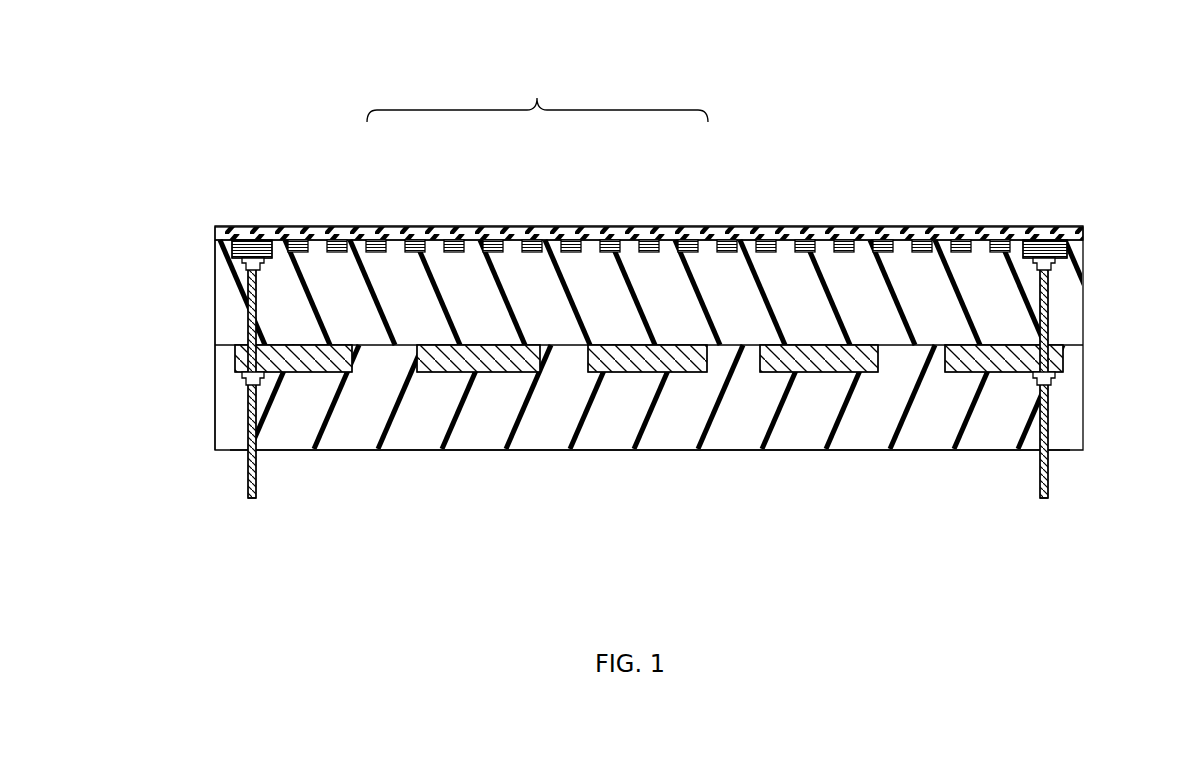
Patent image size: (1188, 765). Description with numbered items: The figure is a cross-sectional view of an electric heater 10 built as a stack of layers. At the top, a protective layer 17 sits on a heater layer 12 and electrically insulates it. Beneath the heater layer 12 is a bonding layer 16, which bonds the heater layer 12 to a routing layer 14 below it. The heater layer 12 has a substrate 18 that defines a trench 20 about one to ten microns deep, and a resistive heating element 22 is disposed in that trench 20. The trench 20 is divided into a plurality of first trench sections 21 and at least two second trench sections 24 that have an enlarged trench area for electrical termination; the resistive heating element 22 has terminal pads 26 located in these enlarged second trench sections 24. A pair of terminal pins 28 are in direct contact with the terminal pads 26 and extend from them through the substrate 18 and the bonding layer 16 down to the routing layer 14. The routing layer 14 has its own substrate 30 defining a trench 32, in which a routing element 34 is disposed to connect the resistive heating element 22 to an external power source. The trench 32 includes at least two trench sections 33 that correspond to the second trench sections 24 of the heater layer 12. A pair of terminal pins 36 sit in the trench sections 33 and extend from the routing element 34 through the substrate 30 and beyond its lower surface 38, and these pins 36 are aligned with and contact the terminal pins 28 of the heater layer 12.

The electric heater 10 is at (914, 93).
The heater layer 12 is at (1100, 285).
The routing layer 14 is at (1088, 417).
The bonding layer 16 is at (1083, 345).
The protective layer 17 is at (750, 240).
The substrate 18 is at (215, 292).
The trench 20 is at (537, 93).
The first trench sections 21 is at (492, 236).
The resistive heating element 22 is at (803, 228).
The second trench sections 24 is at (262, 238).
The terminal pads 26 is at (247, 243).
The terminal pins 28 is at (248, 325).
The substrate 30 is at (215, 420).
The trench 32 is at (422, 358).
The trench sections 33 is at (352, 348).
The routing element 34 is at (673, 372).
The terminal pins 36 is at (248, 487).
The lower surface 38 is at (565, 450).